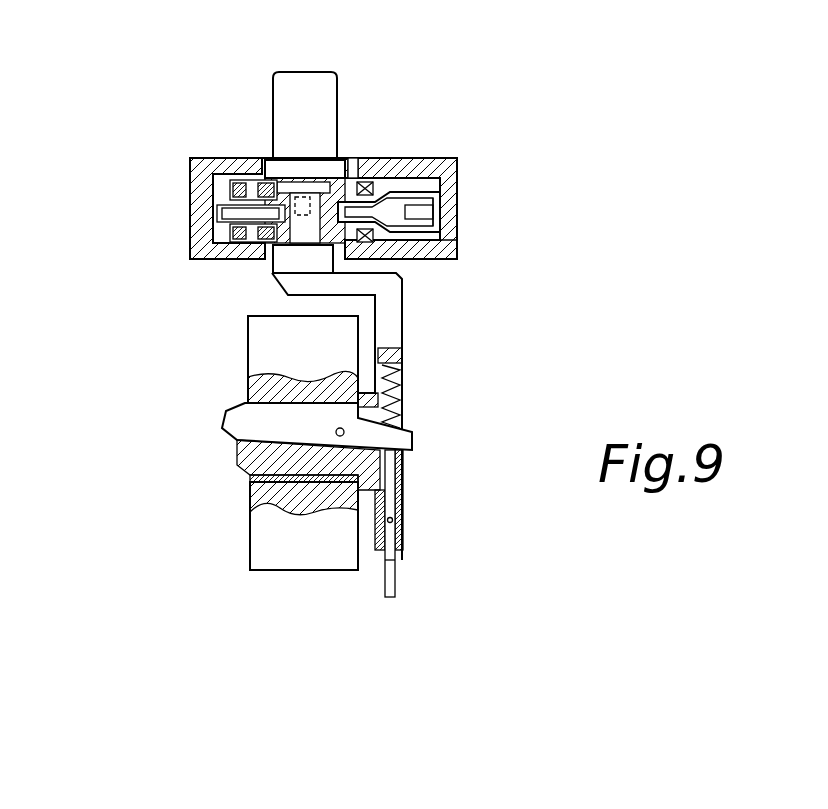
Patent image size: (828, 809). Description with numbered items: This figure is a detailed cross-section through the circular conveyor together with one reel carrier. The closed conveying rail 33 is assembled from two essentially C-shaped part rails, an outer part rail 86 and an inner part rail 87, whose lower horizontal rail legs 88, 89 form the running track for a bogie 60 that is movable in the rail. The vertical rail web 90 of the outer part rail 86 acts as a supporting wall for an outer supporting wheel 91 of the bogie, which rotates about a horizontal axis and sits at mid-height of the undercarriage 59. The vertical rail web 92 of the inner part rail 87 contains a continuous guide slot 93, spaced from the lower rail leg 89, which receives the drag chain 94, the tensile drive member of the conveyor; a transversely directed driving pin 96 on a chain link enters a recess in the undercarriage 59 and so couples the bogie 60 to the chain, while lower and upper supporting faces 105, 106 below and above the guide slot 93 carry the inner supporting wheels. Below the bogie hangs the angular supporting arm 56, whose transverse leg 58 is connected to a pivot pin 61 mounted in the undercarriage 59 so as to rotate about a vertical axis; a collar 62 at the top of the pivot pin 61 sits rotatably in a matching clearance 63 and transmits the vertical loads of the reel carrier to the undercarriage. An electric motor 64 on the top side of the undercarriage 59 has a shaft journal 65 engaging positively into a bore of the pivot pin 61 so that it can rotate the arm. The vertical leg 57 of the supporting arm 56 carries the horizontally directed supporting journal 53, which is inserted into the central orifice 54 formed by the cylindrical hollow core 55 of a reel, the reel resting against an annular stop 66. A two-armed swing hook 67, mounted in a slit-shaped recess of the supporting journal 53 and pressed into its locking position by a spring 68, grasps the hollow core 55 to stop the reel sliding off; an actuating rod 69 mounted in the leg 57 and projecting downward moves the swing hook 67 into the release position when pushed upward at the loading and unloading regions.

The conveying rail 33 is at (432, 103).
The supporting journal 53 is at (246, 474).
The central orifice 54 is at (248, 482).
The hollow core 55 is at (303, 482).
The supporting arm 56 is at (435, 317).
The vertical leg 57 is at (392, 335).
The transverse leg 58 is at (290, 295).
The undercarriage 59 is at (370, 170).
The bogie 60 is at (356, 160).
The pivot pin 61 is at (250, 270).
The collar 62 is at (228, 185).
The clearance 63 is at (443, 228).
The electric motor 64 is at (292, 108).
The shaft journal 65 is at (200, 228).
The annular stop 66 is at (365, 490).
The swing hook 67 is at (247, 427).
The spring 68 is at (400, 396).
The actuating rod 69 is at (388, 573).
The outer part rail 86 is at (196, 156).
The inner part rail 87 is at (475, 158).
The lower horizontal rail leg 88 is at (232, 254).
The lower horizontal rail leg 89 is at (398, 274).
The vertical rail web 90 is at (197, 173).
The outer supporting wheel 91 is at (226, 213).
The vertical rail web 92 is at (447, 213).
The guide slot 93 is at (457, 167).
The drag chain 94 is at (493, 170).
The driving pin 96 is at (400, 170).
The lower supporting face 105 is at (385, 257).
The upper supporting face 106 is at (427, 170).